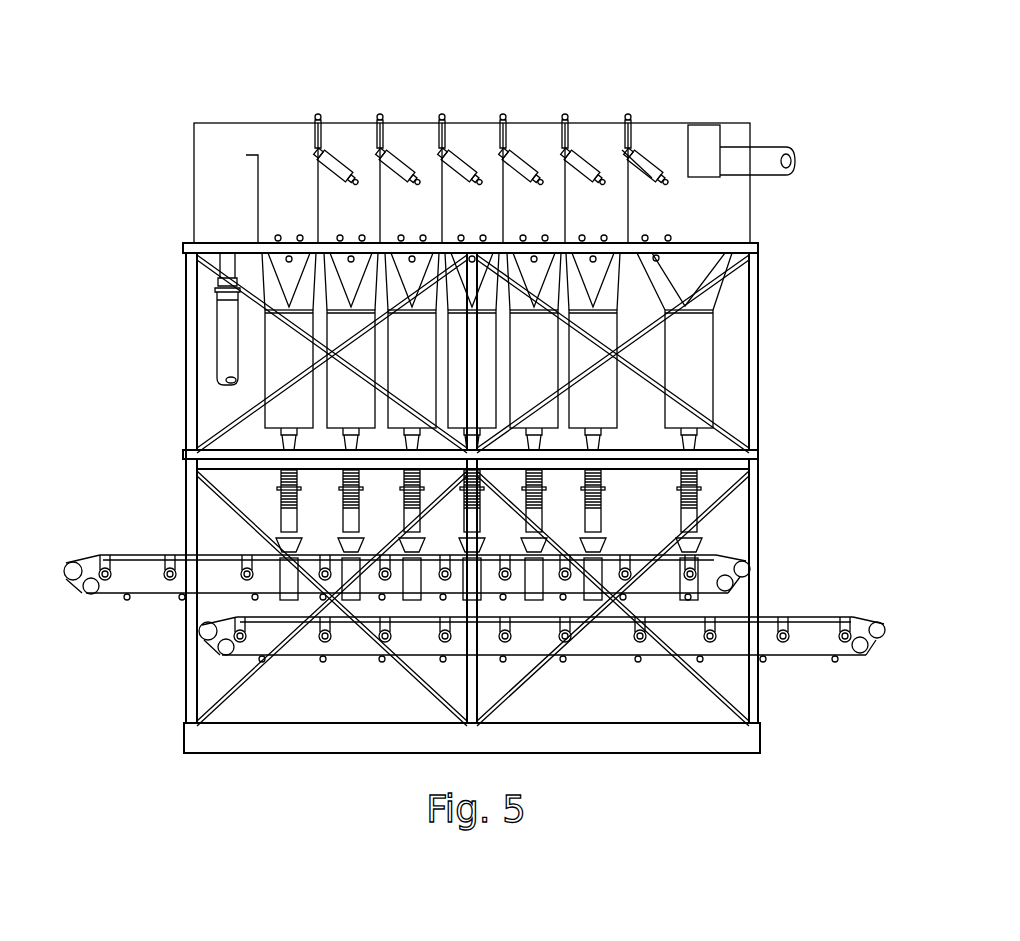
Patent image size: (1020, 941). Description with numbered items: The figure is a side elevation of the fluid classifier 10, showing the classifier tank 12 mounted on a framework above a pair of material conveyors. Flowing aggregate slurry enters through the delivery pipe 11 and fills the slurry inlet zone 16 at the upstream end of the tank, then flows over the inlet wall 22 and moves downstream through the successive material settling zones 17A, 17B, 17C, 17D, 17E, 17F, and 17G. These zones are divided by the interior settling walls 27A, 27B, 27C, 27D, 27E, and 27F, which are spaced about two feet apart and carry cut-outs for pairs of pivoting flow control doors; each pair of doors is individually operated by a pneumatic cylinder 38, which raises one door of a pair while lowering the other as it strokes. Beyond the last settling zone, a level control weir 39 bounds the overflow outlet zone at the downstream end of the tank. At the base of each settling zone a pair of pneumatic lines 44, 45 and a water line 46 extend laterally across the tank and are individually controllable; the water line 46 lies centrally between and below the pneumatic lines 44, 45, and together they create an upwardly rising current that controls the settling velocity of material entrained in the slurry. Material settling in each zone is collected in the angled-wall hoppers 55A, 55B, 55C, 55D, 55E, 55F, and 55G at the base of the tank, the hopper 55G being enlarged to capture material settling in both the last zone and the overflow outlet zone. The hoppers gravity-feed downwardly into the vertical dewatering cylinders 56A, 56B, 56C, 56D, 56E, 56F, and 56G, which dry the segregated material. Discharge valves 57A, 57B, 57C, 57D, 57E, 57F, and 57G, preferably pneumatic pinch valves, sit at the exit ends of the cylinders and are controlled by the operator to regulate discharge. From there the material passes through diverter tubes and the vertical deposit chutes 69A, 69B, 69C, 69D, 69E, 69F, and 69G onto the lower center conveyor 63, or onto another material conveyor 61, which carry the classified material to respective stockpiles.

The classifier 10 is at (130, 192).
The delivery pipe 11 is at (217, 333).
The classifier tank 12 is at (785, 138).
The slurry inlet zone 16 is at (217, 120).
The material settling zone 17A is at (280, 120).
The material settling zone 17B is at (345, 120).
The material settling zone 17C is at (402, 120).
The material settling zone 17D is at (466, 120).
The material settling zone 17E is at (532, 120).
The material settling zone 17F is at (592, 120).
The material settling zone 17G is at (655, 120).
The inlet wall 22 is at (258, 206).
The interior settling wall 27A is at (318, 183).
The interior settling wall 27B is at (378, 172).
The interior settling wall 27C is at (440, 172).
The interior settling wall 27D is at (501, 172).
The interior settling wall 27E is at (563, 172).
The interior settling wall 27F is at (626, 172).
The pneumatic cylinder 38 is at (710, 140).
The level control weir 39 is at (653, 158).
The pneumatic line 44 is at (645, 236).
The pneumatic line 45 is at (669, 236).
The water line 46 is at (660, 258).
The hopper 55A is at (275, 265).
The hopper 55B is at (337, 265).
The hopper 55C is at (398, 265).
The hopper 55D is at (459, 265).
The hopper 55E is at (521, 265).
The hopper 55F is at (581, 265).
The hopper 55G is at (722, 262).
The dewatering cylinder 56A is at (272, 361).
The dewatering cylinder 56B is at (334, 410).
The dewatering cylinder 56C is at (395, 351).
The dewatering cylinder 56D is at (456, 386).
The dewatering cylinder 56E is at (518, 368).
The dewatering cylinder 56F is at (578, 403).
The dewatering cylinder 56G is at (671, 363).
The discharge valve 57A is at (283, 447).
The discharge valve 57B is at (345, 446).
The discharge valve 57C is at (406, 446).
The discharge valve 57D is at (466, 447).
The discharge valve 57E is at (528, 447).
The discharge valve 57F is at (587, 446).
The discharge valve 57G is at (683, 447).
The material conveyor 61 is at (100, 565).
The lower center conveyor 63 is at (340, 658).
The vertical deposit chute 69A is at (290, 545).
The vertical deposit chute 69B is at (345, 548).
The vertical deposit chute 69C is at (406, 548).
The vertical deposit chute 69D is at (463, 552).
The vertical deposit chute 69E is at (540, 548).
The vertical deposit chute 69F is at (610, 548).
The vertical deposit chute 69G is at (700, 548).